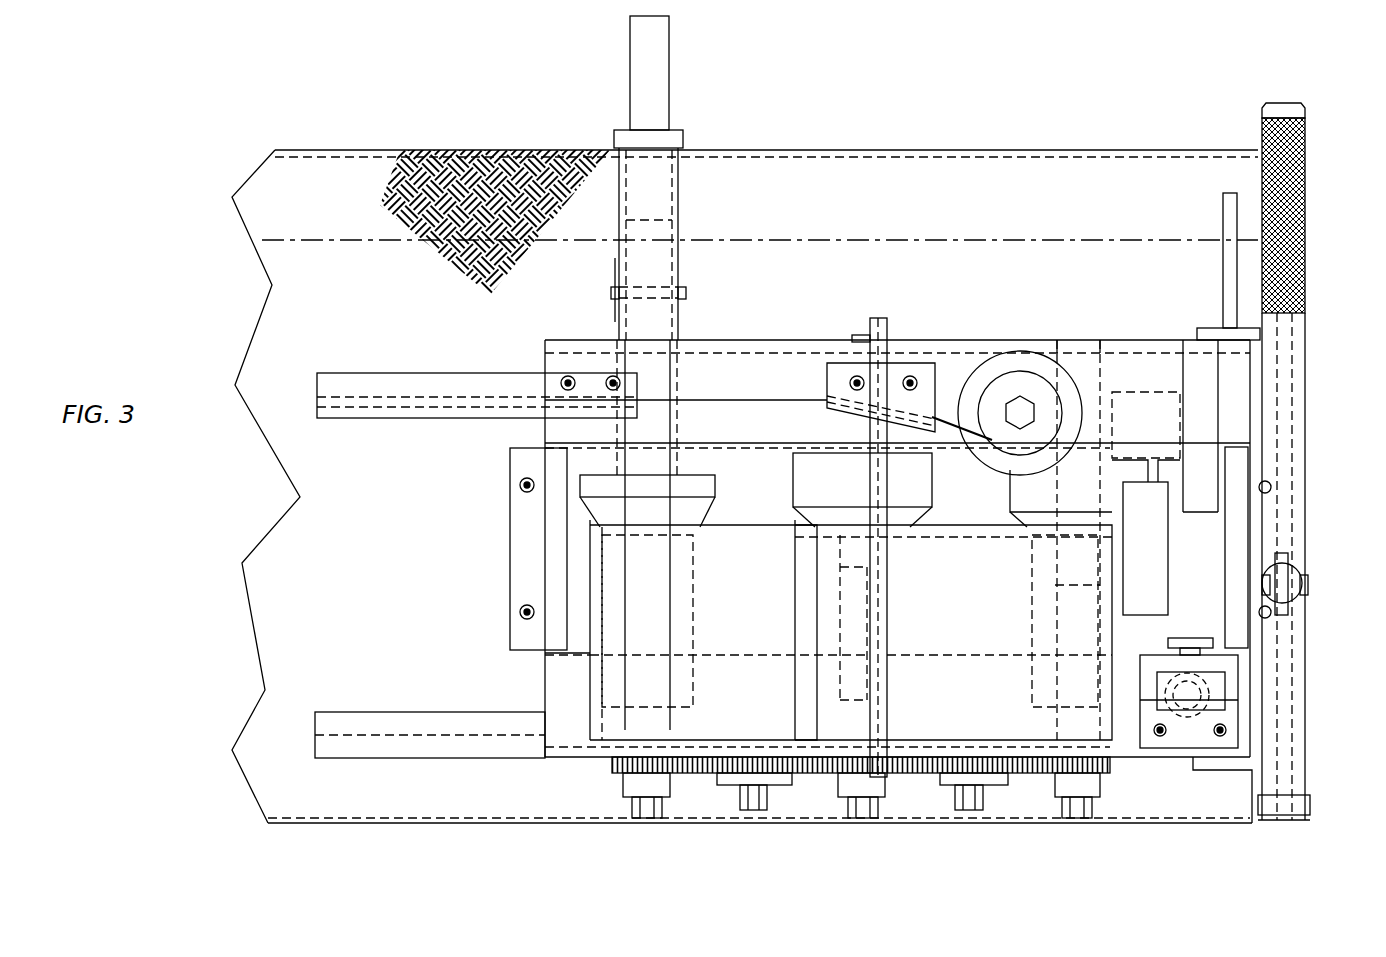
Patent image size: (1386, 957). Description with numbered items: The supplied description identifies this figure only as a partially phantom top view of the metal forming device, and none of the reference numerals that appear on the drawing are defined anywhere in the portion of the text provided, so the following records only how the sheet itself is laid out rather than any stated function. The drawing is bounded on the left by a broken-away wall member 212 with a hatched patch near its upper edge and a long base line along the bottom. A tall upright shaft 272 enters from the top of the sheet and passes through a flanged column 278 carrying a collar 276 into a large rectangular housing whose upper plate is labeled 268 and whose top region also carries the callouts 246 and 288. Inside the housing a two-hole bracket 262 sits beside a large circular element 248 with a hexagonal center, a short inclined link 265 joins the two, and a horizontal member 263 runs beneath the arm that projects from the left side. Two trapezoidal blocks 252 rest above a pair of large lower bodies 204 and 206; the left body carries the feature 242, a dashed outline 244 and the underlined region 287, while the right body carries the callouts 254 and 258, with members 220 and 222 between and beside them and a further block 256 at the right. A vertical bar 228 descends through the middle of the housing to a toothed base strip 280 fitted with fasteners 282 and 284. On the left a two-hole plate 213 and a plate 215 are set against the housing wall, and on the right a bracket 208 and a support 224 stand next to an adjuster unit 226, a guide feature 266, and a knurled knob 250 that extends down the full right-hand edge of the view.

The first die block 204 is at (687, 528).
The second die block 206 is at (900, 528).
The mounting bracket 208 is at (1135, 497).
The housing wall 212 is at (358, 595).
The mounting plate 213 is at (527, 463).
The support plate 215 is at (578, 642).
The side plate 220 is at (595, 507).
The insert plate 222 is at (818, 527).
The support member 224 is at (1128, 522).
The adjustment assembly 226 is at (1195, 690).
The mounting bar 228 is at (780, 345).
The insert 242 is at (698, 487).
The pocket 244 is at (682, 692).
The top bracket 246 is at (938, 357).
The cam 248 is at (1012, 378).
The knob 250 is at (1287, 112).
The clamp block 252 is at (790, 480).
The block 254 is at (897, 643).
The stop block 256 is at (1000, 482).
The cavity 258 is at (1047, 628).
The pivot bracket 262 is at (883, 318).
The bolt 263 is at (665, 426).
The link 265 is at (850, 426).
The guide 266 is at (1080, 360).
The top plate 268 is at (700, 340).
The shaft 272 is at (655, 67).
The collar 276 is at (680, 296).
The piston column 278 is at (648, 287).
The base strip 280 is at (663, 752).
The bolt 282 is at (858, 752).
The bolt 284 is at (1073, 752).
The cavity 287 is at (770, 650).
The plate 288 is at (960, 347).